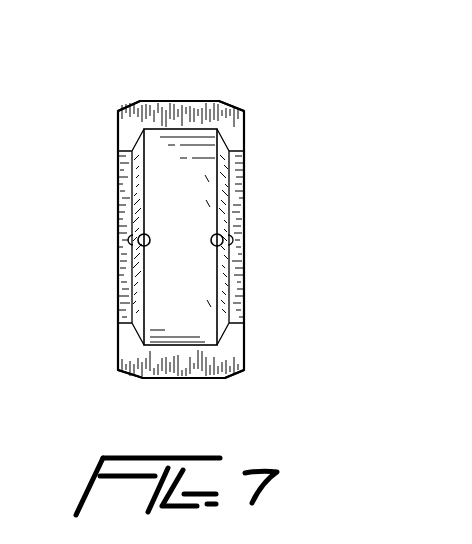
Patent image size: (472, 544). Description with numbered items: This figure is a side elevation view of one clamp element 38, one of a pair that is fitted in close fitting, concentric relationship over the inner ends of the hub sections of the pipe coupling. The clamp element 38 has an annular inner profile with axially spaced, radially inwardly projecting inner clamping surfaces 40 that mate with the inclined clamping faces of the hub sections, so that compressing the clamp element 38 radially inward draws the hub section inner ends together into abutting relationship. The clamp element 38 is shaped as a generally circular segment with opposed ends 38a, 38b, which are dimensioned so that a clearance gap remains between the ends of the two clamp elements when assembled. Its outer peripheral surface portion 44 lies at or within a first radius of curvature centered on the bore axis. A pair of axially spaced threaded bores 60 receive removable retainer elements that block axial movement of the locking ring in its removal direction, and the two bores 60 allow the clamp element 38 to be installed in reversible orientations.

The clamp element 38 is at (243, 112).
The opposed end of clamp element 38a is at (128, 106).
The opposed end of clamp element 38b is at (125, 363).
The outer peripheral surface portion 44 is at (182, 100).
The inner clamping surfaces 40 is at (136, 148).
The threaded bore 60 is at (142, 234).